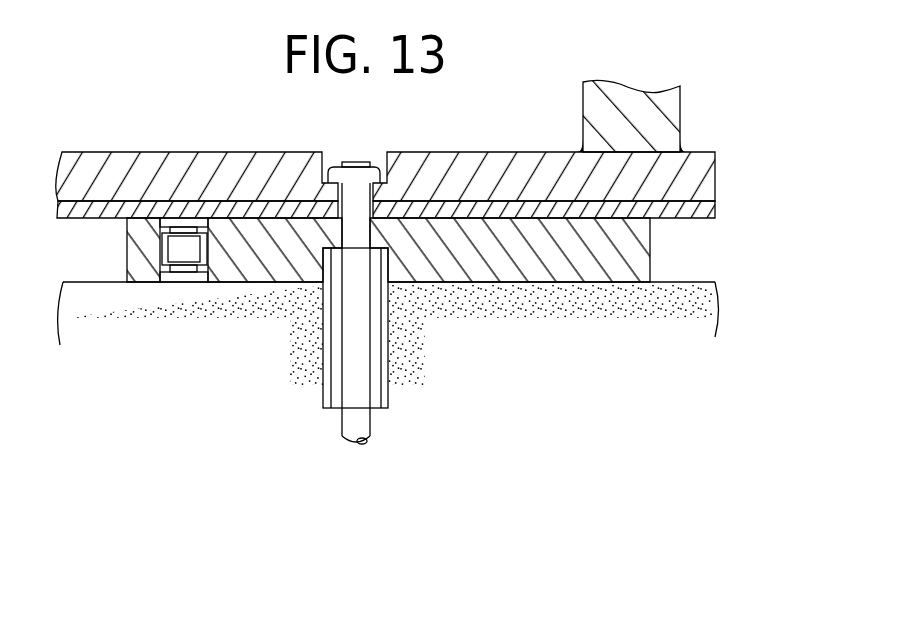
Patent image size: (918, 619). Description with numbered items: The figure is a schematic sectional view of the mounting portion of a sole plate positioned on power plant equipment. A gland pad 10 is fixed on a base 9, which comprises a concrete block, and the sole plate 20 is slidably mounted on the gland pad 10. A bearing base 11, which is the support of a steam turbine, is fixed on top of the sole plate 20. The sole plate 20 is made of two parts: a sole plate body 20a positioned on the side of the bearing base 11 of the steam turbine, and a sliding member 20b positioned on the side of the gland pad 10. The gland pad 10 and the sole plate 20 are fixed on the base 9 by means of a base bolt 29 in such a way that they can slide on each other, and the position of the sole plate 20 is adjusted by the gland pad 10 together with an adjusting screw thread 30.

The base 9 is at (715, 312).
The gland pad 10 is at (650, 248).
The bearing base 11 is at (677, 105).
The sole plate 20 is at (444, 180).
The sole plate body 20a is at (715, 172).
The sliding member 20b is at (715, 203).
The base bolt 29 is at (353, 163).
The adjusting screw thread 30 is at (160, 257).